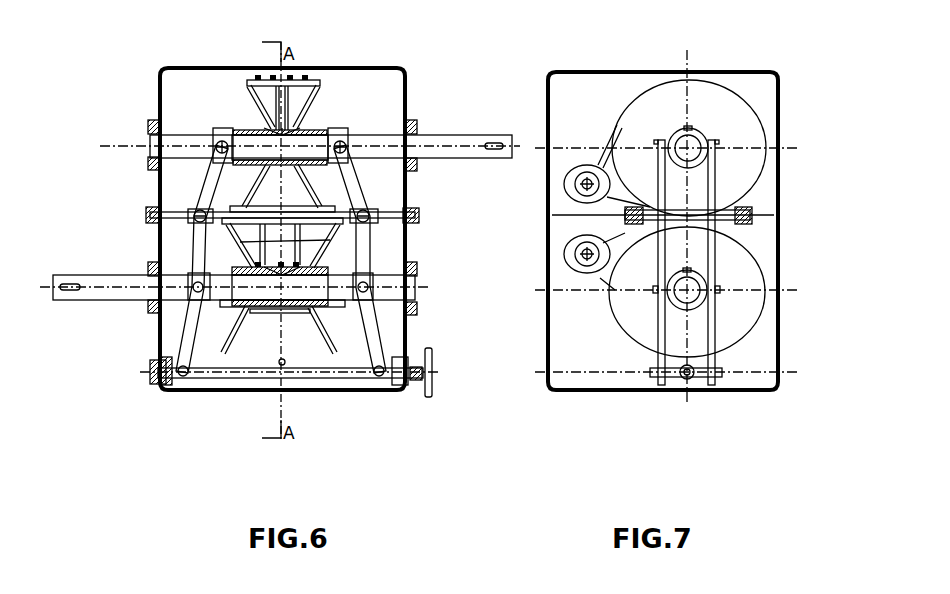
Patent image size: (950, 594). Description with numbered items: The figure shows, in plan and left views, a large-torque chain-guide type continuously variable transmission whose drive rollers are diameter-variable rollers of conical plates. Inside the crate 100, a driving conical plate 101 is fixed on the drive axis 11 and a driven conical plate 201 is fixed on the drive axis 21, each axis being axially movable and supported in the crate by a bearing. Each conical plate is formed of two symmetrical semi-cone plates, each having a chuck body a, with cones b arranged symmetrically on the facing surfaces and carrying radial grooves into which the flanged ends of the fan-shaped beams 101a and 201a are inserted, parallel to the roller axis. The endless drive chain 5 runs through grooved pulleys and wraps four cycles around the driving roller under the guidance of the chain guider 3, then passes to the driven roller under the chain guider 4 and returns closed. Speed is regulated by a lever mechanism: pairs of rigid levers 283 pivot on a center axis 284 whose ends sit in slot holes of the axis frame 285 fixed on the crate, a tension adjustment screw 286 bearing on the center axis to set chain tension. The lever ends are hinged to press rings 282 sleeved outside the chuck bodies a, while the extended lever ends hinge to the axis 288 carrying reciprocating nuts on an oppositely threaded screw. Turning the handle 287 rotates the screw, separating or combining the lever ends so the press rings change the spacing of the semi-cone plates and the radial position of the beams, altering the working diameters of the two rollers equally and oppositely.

In FIG. 7, the crate 100 is at (557, 68).
In FIG. 6, the conical plate 201 is at (248, 92).
In FIG. 7, the conical plate 201 is at (652, 105).
In FIG. 6, the beam 201a is at (305, 78).
In FIG. 6, the drive axis 21 is at (450, 152).
In FIG. 7, the drive axis 21 is at (694, 143).
In FIG. 6, the drive axis 11 is at (87, 305).
In FIG. 7, the drive axis 11 is at (683, 297).
In FIG. 6, the conical plate 101 is at (335, 320).
In FIG. 7, the conical plate 101 is at (635, 320).
In FIG. 6, the beam 101a is at (295, 303).
In FIG. 6, the press ring 282 is at (348, 128).
In FIG. 6, the lever 283 is at (373, 347).
In FIG. 7, the lever 283 is at (655, 347).
In FIG. 6, the center axis 284 is at (187, 215).
In FIG. 7, the center axis 284 is at (742, 213).
In FIG. 6, the axis frame 285 is at (400, 212).
In FIG. 6, the tension adjustment screw 286 is at (412, 222).
In FIG. 6, the handle 287 is at (427, 392).
In FIG. 6, the axis 288 is at (173, 383).
In FIG. 6, the endless drive chain 5 is at (245, 242).
In FIG. 7, the endless drive chain 5 is at (607, 140).
In FIG. 7, the chain guider 4 is at (567, 185).
In FIG. 7, the chain guider 3 is at (571, 257).
In FIG. 6, the chuck body a is at (240, 340).
In FIG. 6, the cone b is at (240, 337).